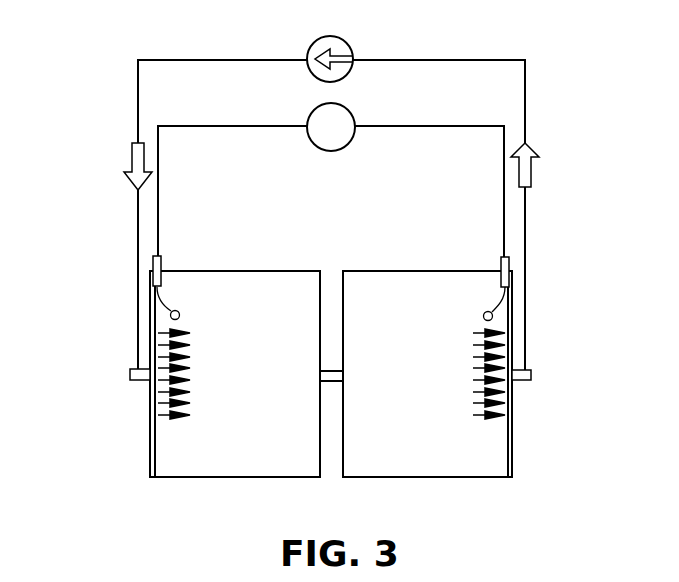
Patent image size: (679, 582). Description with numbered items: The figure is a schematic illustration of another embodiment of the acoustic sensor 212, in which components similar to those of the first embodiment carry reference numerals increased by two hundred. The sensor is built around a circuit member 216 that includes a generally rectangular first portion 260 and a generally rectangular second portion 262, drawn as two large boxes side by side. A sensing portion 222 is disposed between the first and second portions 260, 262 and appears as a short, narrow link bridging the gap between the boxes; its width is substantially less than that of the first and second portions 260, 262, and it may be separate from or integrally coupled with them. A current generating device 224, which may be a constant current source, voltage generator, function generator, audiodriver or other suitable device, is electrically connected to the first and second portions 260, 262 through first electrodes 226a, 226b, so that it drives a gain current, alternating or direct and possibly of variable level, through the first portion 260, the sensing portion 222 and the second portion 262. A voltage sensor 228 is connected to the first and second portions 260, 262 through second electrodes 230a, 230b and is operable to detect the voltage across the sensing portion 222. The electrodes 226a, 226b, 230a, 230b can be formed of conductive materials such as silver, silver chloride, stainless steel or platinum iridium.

The acoustic sensor 212 is at (553, 123).
The circuit member 216 is at (236, 478).
The sensing portion 222 is at (332, 368).
The current generating device 224 is at (353, 50).
The first electrode 226a is at (130, 371).
The first electrode 226b is at (520, 380).
The voltage sensor 228 is at (355, 117).
The second electrode 230a is at (165, 263).
The second electrode 230b is at (497, 262).
The first portion 260 is at (173, 463).
The second portion 262 is at (477, 462).